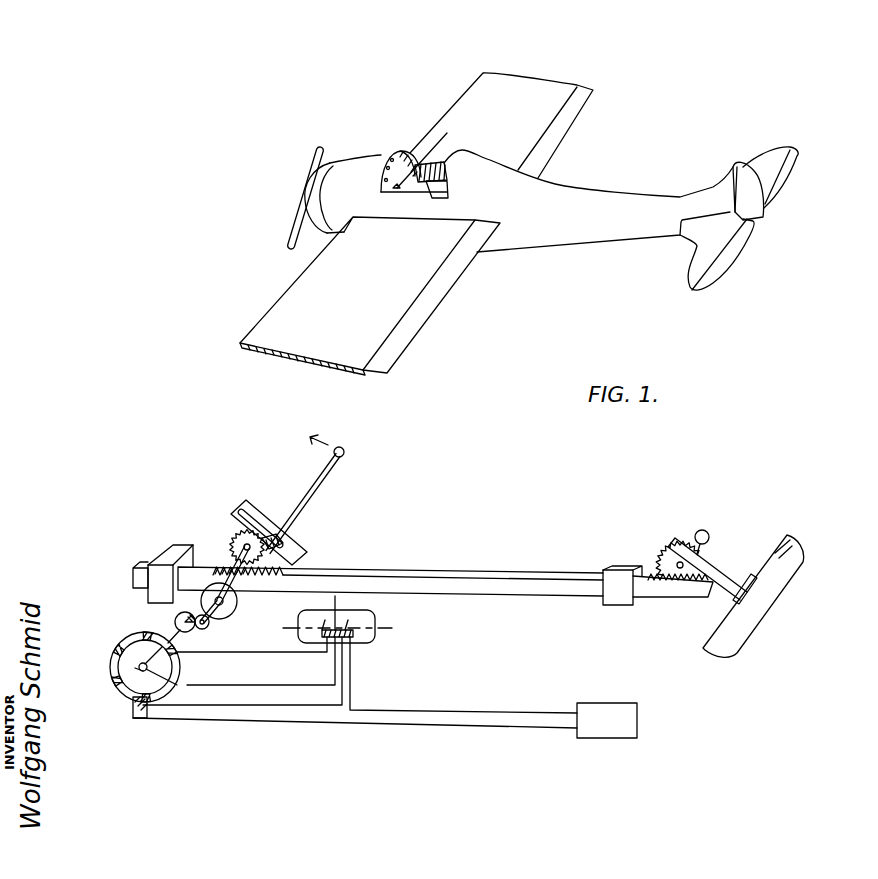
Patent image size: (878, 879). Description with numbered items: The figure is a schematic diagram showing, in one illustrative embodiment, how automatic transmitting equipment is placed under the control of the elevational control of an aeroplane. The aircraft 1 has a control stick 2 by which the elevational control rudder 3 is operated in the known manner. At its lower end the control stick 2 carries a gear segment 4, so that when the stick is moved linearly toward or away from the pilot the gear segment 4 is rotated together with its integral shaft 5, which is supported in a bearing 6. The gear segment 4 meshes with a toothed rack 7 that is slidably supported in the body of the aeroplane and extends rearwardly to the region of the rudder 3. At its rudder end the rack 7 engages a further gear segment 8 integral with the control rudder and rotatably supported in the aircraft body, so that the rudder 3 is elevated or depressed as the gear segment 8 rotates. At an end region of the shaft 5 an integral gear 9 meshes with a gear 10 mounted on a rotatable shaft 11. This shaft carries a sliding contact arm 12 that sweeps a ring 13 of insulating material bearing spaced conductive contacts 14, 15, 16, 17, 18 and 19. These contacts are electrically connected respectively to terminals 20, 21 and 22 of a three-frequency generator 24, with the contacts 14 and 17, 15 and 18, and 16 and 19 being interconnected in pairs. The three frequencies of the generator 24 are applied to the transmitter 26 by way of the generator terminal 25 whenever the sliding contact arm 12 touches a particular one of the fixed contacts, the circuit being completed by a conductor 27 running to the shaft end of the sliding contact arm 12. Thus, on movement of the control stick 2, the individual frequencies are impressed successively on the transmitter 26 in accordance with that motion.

The aircraft 1 is at (598, 187).
The control stick 2 is at (345, 452).
The elevational control rudder 3 is at (740, 262).
The gear segment 4 is at (235, 542).
The shaft 5 is at (243, 582).
The bearing 6 is at (230, 606).
The rack 7 is at (408, 585).
The gear segment 8 is at (674, 558).
The gear 9 is at (209, 624).
The gear 10 is at (178, 618).
The rotatable shaft 11 is at (189, 632).
The sliding contact arm 12 is at (150, 672).
The ring 13 is at (122, 699).
The conductive contact 14 is at (175, 650).
The conductive contact 15 is at (173, 683).
The conductive contact 16 is at (143, 705).
The conductive contact 17 is at (115, 681).
The conductive contact 18 is at (117, 650).
The conductive contact 19 is at (145, 633).
The terminal 20 is at (314, 620).
The terminal 21 is at (325, 611).
The terminal 22 is at (356, 620).
The three-frequency generator 24 is at (368, 640).
The generator terminal 25 is at (352, 635).
The transmitter 26 is at (627, 718).
The conductor 27 is at (428, 725).